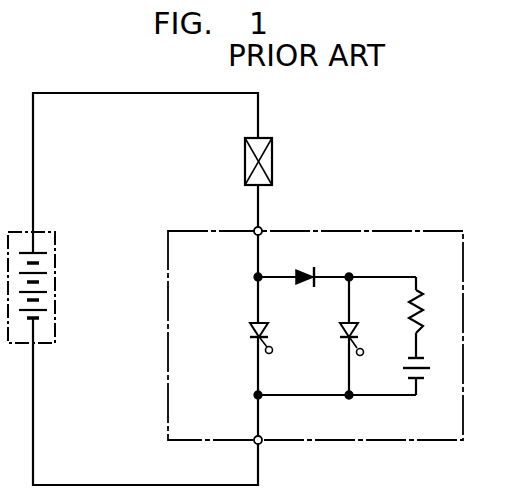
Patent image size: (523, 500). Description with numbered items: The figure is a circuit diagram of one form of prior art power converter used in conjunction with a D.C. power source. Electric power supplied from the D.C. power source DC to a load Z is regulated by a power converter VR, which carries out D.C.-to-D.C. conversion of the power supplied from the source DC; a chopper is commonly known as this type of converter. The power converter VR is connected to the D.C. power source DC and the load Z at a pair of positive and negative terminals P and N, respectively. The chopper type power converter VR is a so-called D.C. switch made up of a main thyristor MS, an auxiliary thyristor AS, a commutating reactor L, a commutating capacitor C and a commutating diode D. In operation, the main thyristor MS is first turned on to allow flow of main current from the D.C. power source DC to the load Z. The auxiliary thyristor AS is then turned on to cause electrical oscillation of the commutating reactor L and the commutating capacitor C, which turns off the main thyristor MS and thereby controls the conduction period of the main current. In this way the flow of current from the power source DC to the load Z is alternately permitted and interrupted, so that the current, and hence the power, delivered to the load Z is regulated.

The load Z is at (273, 165).
The negative terminal N is at (266, 224).
The positive terminal P is at (261, 444).
The D.C. power source DC is at (55, 258).
The power converter VR is at (400, 214).
The commutating diode D is at (304, 272).
The main thyristor MS is at (266, 332).
The auxiliary thyristor AS is at (356, 335).
The commutating reactor L is at (423, 313).
The commutating capacitor C is at (428, 371).